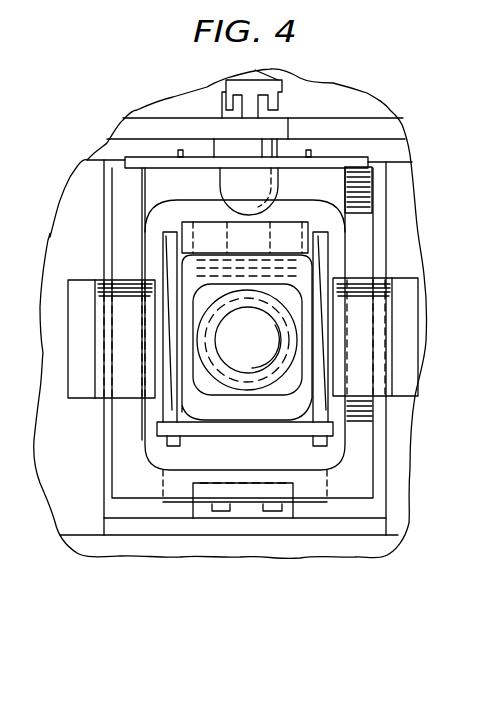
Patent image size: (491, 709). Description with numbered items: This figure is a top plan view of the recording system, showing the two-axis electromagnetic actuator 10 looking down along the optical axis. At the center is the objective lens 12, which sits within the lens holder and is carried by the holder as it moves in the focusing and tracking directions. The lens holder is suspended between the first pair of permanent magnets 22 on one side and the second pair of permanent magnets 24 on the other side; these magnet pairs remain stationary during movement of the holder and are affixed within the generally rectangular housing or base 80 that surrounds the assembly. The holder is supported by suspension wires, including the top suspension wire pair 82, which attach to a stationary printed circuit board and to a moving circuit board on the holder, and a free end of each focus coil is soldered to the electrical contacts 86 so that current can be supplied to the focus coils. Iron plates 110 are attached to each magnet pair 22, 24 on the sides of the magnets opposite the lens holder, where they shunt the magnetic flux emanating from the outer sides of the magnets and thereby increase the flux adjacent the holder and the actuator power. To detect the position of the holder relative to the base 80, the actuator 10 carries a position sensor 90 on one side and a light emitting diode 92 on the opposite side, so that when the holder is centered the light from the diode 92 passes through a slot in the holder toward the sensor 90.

The two-axis electromagnetic actuator 10 is at (66, 158).
The objective lens 12 is at (231, 318).
The first pair of permanent magnets 22 is at (120, 278).
The second pair of permanent magnets 24 is at (366, 290).
The base 80 is at (135, 487).
The first suspension wire pair 82 is at (372, 190).
The electrical contacts 86 is at (300, 440).
The position sensor 90 is at (247, 508).
The light emitting diode 92 is at (227, 150).
The iron plates 110 is at (75, 399).